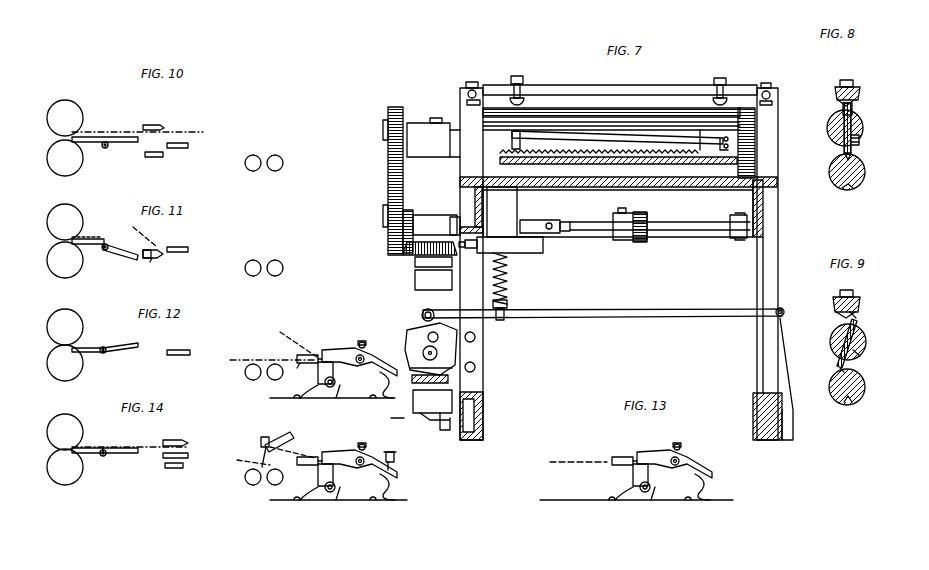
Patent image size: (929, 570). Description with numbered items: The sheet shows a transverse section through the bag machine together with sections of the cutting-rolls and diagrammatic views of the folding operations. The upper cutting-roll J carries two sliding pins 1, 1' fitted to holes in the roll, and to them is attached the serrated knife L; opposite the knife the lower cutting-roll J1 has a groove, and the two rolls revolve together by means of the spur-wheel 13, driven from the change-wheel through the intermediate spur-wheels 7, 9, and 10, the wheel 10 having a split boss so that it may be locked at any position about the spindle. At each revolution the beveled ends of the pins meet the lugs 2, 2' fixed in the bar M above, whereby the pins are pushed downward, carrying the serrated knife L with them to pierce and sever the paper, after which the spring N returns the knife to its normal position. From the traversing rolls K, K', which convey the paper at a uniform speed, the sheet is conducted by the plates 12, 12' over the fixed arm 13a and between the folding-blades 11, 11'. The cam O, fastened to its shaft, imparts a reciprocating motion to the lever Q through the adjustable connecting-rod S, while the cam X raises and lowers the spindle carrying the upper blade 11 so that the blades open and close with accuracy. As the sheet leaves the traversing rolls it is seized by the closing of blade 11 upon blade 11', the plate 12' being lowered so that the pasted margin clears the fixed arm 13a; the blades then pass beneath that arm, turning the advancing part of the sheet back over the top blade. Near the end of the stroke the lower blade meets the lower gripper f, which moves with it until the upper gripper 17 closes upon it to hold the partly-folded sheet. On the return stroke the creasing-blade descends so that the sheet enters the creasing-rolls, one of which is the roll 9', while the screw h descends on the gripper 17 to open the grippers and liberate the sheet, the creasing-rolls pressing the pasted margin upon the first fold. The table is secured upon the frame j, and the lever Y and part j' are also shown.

In FIG. 7, the bar M is at (620, 81).
In FIG. 8, the bar M is at (860, 93).
In FIG. 9, the bar M is at (833, 306).
In FIG. 7, the lug 2' is at (626, 78).
In FIG. 7, the sliding pin 1' is at (637, 85).
In FIG. 7, the spur-wheel 13 is at (755, 124).
In FIG. 7, the serrated knife L is at (620, 141).
In FIG. 8, the serrated knife L is at (860, 158).
In FIG. 9, the serrated knife L is at (852, 357).
In FIG. 7, the upper cutting-roll J is at (497, 134).
In FIG. 8, the upper cutting-roll J is at (828, 132).
In FIG. 9, the upper cutting-roll J is at (830, 340).
In FIG. 7, the intermediate spur-wheel 7 is at (792, 371).
In FIG. 7, the lower cutting-roll J1 is at (487, 163).
In FIG. 8, the lower cutting-roll J1 is at (830, 175).
In FIG. 9, the lower cutting-roll J1 is at (830, 380).
In FIG. 7, the spring N is at (702, 142).
In FIG. 8, the spring N is at (862, 146).
In FIG. 9, the spring N is at (862, 356).
In FIG. 7, the wheel 10 is at (433, 137).
In FIG. 7, the intermediate spur-wheel 9 is at (412, 181).
In FIG. 10, the intermediate spur-wheel 9 is at (253, 173).
In FIG. 11, the intermediate spur-wheel 9 is at (253, 278).
In FIG. 12, the intermediate spur-wheel 9 is at (249, 382).
In FIG. 14, the intermediate spur-wheel 9 is at (253, 487).
In FIG. 10, the creasing-roll 9' is at (275, 172).
In FIG. 11, the creasing-roll 9' is at (275, 277).
In FIG. 12, the creasing-roll 9' is at (270, 381).
In FIG. 14, the creasing-roll 9' is at (272, 486).
In FIG. 7, the adjustable connecting-rod S is at (547, 222).
In FIG. 7, the cam O is at (630, 219).
In FIG. 7, the lever Q is at (501, 278).
In FIG. 7, the lever Y is at (468, 318).
In FIG. 7, the cam X is at (440, 353).
In FIG. 7, the frame j is at (766, 315).
In FIG. 8, the frame j is at (839, 199).
In FIG. 9, the groove j' is at (851, 407).
In FIG. 8, the lug 2 is at (866, 111).
In FIG. 9, the lug 2 is at (866, 311).
In FIG. 8, the sliding pin 1 is at (864, 128).
In FIG. 9, the sliding pin 1 is at (862, 343).
In FIG. 10, the traversing roll K is at (65, 118).
In FIG. 11, the traversing roll K is at (65, 222).
In FIG. 12, the traversing roll K is at (65, 327).
In FIG. 14, the traversing roll K is at (65, 432).
In FIG. 10, the traversing roll K' is at (65, 158).
In FIG. 11, the traversing roll K' is at (65, 260).
In FIG. 12, the traversing roll K' is at (65, 363).
In FIG. 14, the traversing roll K' is at (65, 467).
In FIG. 10, the plate 12 is at (105, 155).
In FIG. 11, the plate 12 is at (90, 257).
In FIG. 12, the plate 12 is at (89, 361).
In FIG. 14, the plate 12 is at (119, 460).
In FIG. 11, the plate 12' is at (120, 258).
In FIG. 12, the plate 12' is at (122, 358).
In FIG. 14, the plate 12' is at (89, 464).
In FIG. 10, the folding-blade 11 is at (163, 119).
In FIG. 11, the folding-blade 11 is at (158, 243).
In FIG. 12, the folding-blade 11 is at (297, 352).
In FIG. 14, the folding-blade 11 is at (225, 446).
In FIG. 13, the folding-blade 11 is at (617, 467).
In FIG. 10, the folding-blade 11' is at (155, 162).
In FIG. 11, the folding-blade 11' is at (150, 269).
In FIG. 12, the folding-blade 11' is at (306, 374).
In FIG. 14, the folding-blade 11' is at (168, 466).
In FIG. 10, the fixed arm 13a is at (185, 147).
In FIG. 11, the fixed arm 13a is at (181, 252).
In FIG. 12, the fixed arm 13a is at (175, 355).
In FIG. 14, the fixed arm 13a is at (185, 460).
In FIG. 12, the upper gripper 17 is at (366, 333).
In FIG. 14, the upper gripper 17 is at (366, 436).
In FIG. 13, the upper gripper 17 is at (680, 461).
In FIG. 12, the lower gripper f is at (335, 372).
In FIG. 14, the lower gripper f is at (335, 474).
In FIG. 13, the lower gripper f is at (645, 474).
In FIG. 14, the screw h is at (390, 457).